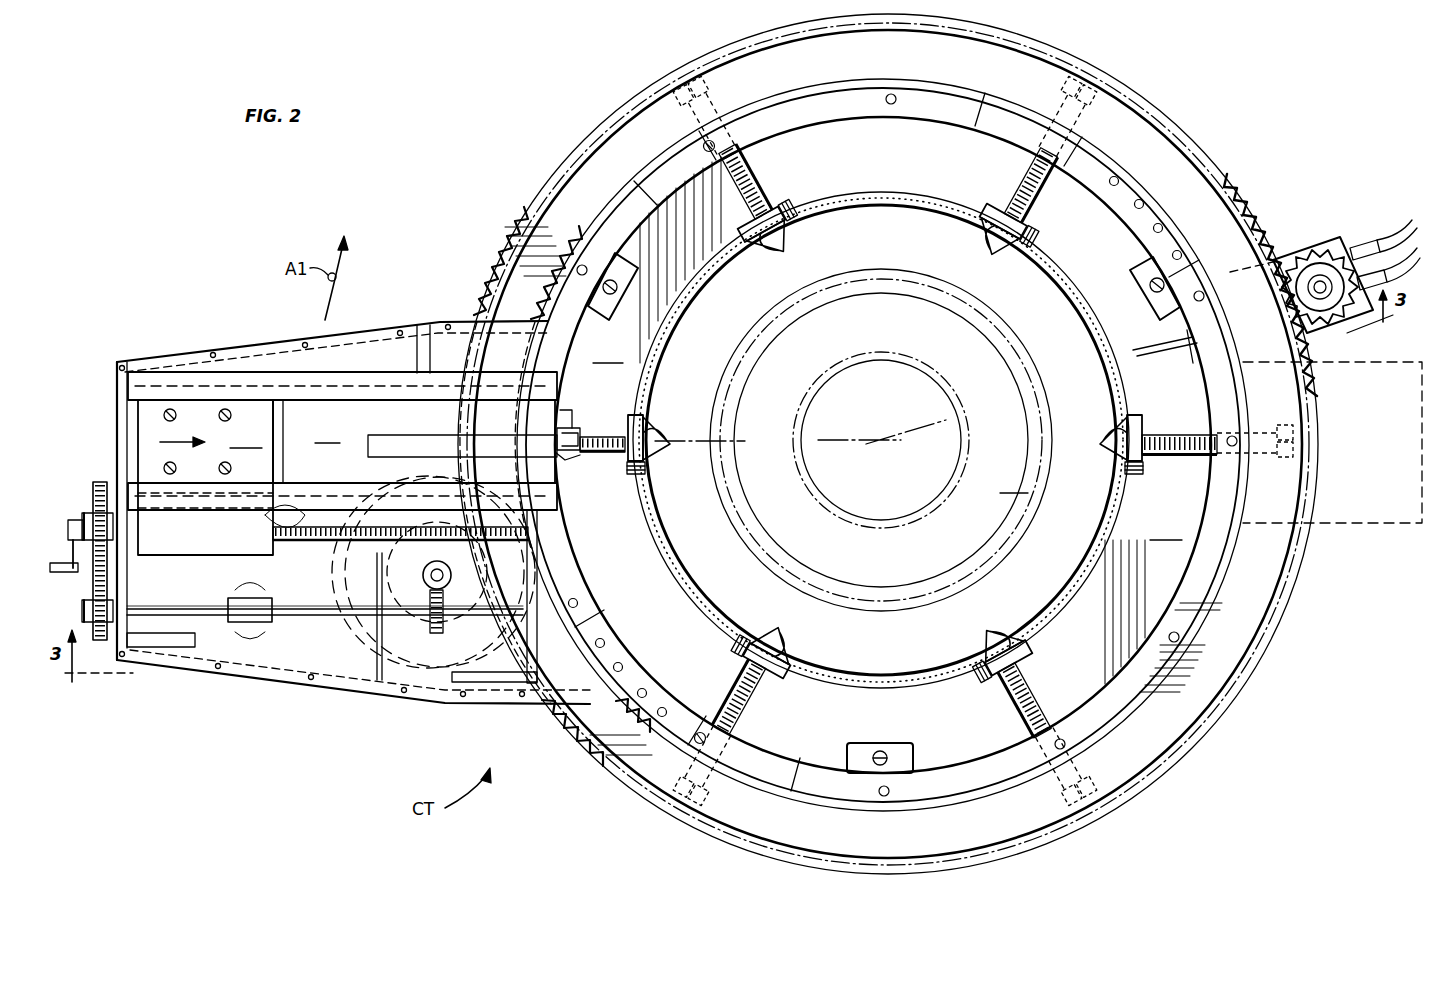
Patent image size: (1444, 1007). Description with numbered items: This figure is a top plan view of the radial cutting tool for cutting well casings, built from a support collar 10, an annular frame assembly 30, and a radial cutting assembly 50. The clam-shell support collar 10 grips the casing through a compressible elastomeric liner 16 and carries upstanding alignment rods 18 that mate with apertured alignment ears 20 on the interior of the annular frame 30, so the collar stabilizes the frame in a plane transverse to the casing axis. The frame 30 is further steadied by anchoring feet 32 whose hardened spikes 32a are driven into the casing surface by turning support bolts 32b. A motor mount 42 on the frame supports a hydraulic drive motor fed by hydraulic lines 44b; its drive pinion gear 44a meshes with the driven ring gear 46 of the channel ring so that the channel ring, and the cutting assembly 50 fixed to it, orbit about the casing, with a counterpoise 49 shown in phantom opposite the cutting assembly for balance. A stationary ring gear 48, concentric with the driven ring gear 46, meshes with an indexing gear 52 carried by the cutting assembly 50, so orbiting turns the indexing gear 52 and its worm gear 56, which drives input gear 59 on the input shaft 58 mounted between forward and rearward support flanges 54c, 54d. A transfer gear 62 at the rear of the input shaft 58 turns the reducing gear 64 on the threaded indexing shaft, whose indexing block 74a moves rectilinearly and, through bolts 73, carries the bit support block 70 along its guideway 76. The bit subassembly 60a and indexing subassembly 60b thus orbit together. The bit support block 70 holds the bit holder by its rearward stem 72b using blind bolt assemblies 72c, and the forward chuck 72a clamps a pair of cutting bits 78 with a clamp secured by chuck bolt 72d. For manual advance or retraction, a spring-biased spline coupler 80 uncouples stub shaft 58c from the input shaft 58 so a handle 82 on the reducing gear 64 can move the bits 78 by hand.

The support collar 10 is at (892, 680).
The compressible liner 16 is at (881, 440).
The alignment rods 18 is at (608, 281).
The alignment ears 20 is at (612, 306).
The annular frame assembly 30 is at (645, 780).
The anchoring feet 32 is at (1143, 420).
The hardened spikes 32a is at (1108, 443).
The support bolts 32b is at (1172, 460).
The motor mount 42 is at (1325, 333).
The drive pinion gear 44a is at (1310, 252).
The hydraulic lines 44b is at (1375, 240).
The driven ring gear 46 is at (1310, 368).
The stationary ring gear 48 is at (550, 296).
The counterpoise 49 is at (1355, 523).
The radial cutting assembly 50 is at (220, 690).
The indexing gear 52 is at (368, 685).
The forward support flange 54c is at (538, 660).
The rearward support flange 54d is at (127, 573).
The worm gear 56 is at (400, 542).
The input shaft 58 is at (285, 615).
The stub shaft 58c is at (195, 608).
The input gear 59 is at (445, 620).
The radial bit subassembly 60a is at (342, 360).
The indexing subassembly 60b is at (108, 665).
The transfer gear 62 is at (99, 645).
The reducing gear 64 is at (100, 480).
The bit support block 70 is at (414, 441).
The forward chuck 72a is at (565, 460).
The rearward stem 72b is at (424, 440).
The blind bolt assemblies 72c is at (567, 412).
The chuck bolt 72d is at (565, 432).
The bolts 73 is at (225, 410).
The indexing block 74a is at (205, 477).
The guideway 76 is at (362, 376).
The cutting bits 78 is at (598, 438).
The spline coupler 80 is at (265, 598).
The handle 82 is at (64, 574).